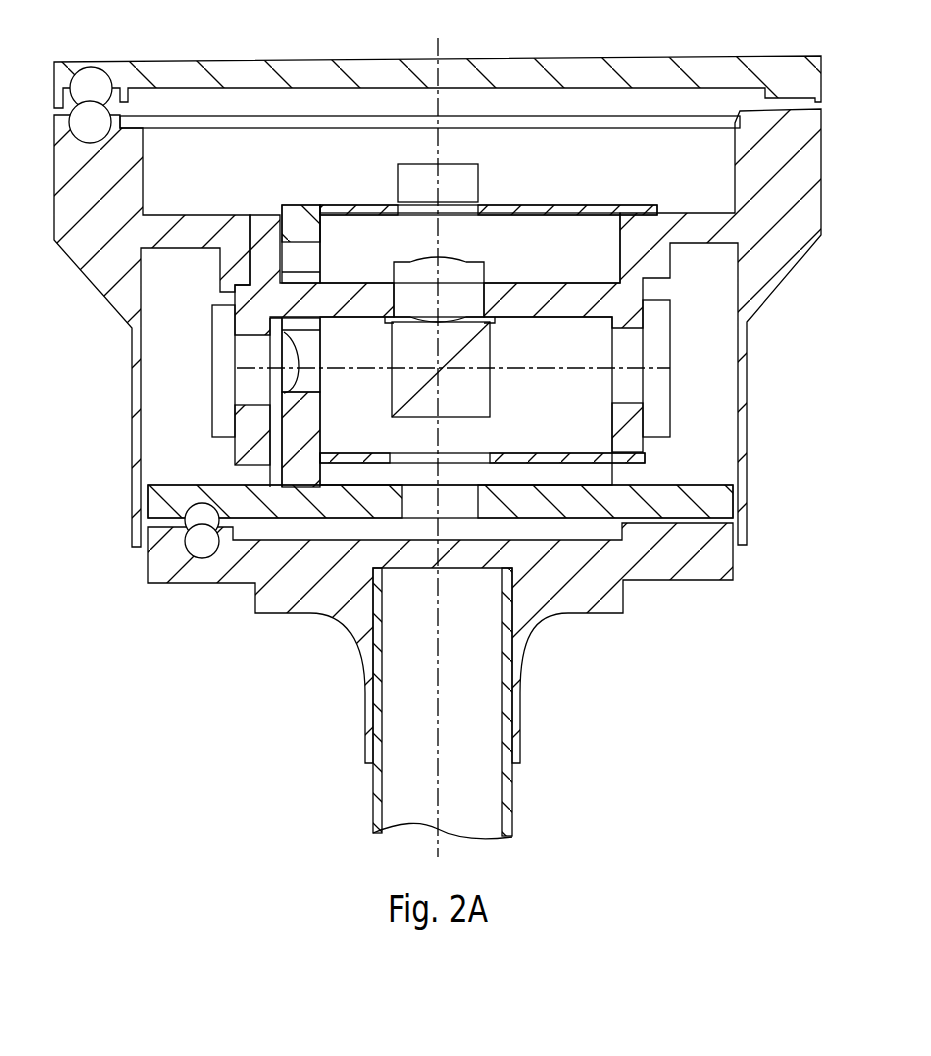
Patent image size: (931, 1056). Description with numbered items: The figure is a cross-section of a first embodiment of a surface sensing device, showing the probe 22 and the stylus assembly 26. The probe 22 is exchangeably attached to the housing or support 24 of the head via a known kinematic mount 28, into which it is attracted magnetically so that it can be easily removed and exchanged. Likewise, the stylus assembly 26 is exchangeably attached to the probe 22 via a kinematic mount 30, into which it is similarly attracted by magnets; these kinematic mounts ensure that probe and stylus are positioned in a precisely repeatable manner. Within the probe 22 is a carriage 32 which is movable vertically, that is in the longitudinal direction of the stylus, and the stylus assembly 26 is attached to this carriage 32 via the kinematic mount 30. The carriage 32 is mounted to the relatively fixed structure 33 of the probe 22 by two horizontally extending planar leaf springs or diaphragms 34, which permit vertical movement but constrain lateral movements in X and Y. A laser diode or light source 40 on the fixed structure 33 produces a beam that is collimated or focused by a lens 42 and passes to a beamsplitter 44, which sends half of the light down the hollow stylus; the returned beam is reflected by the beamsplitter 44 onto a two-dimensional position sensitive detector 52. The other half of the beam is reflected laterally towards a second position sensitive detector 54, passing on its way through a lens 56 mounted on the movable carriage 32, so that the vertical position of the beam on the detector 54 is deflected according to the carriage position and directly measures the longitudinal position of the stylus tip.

The probe 22 is at (755, 415).
The housing or support 24 is at (821, 82).
The stylus assembly 26 is at (322, 770).
The kinematic mount 28 is at (95, 118).
The kinematic mount 30 is at (182, 523).
The carriage 32 is at (288, 207).
The fixed structure 33 is at (800, 250).
The planar leaf springs or diaphragms 34 is at (367, 205).
The laser diode or light source 40 is at (474, 184).
The lens 42 is at (478, 277).
The beamsplitter 44 is at (473, 360).
The two-dimensional position sensitive detector 52 is at (664, 410).
The second position sensitive detector 54 is at (222, 392).
The lens 56 is at (298, 380).